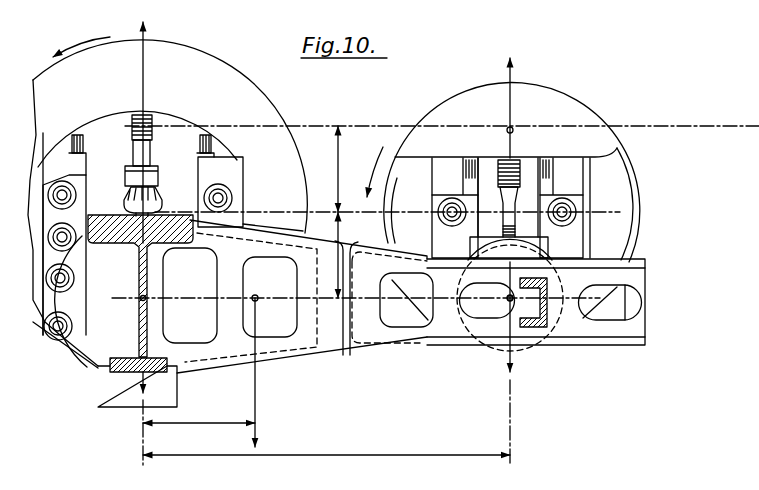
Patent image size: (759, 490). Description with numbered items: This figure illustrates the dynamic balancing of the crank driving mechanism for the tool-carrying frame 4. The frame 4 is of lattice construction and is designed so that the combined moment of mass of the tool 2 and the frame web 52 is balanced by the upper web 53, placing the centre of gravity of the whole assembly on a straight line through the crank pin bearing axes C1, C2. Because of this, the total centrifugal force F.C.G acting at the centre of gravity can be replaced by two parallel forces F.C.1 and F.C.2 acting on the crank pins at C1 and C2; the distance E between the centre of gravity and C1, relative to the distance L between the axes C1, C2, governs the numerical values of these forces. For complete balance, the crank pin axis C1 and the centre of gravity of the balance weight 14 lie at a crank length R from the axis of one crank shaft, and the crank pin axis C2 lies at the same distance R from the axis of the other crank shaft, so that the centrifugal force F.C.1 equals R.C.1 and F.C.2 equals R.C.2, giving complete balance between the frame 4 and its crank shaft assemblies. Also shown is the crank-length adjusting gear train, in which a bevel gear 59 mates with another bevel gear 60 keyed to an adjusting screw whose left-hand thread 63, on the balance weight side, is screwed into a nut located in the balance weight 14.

The tool 2 is at (116, 400).
The tool-carrying frame 4 is at (377, 338).
The balance weight 14 is at (218, 69).
The frame web 52 is at (116, 362).
The upper web 53 is at (123, 237).
The bevel gear 59 is at (160, 204).
The bevel gear 60 is at (158, 181).
The left-hand thread 63 is at (152, 133).
The crank pin bearing axis C1 is at (137, 296).
The crank pin bearing axis C2 is at (508, 300).
The centrifugal force of crank assembly one R.C.1 is at (148, 38).
The centrifugal force of crank assembly two R.C.2 is at (515, 73).
The centrifugal force on crank pin one F.C.1 is at (133, 382).
The centrifugal force on crank pin two F.C.2 is at (515, 345).
The total centrifugal force F.C.G is at (257, 378).
The distance between centre of gravity and C1 E is at (199, 413).
The distance between crank pin axes L is at (326, 445).
The crank length R is at (330, 212).